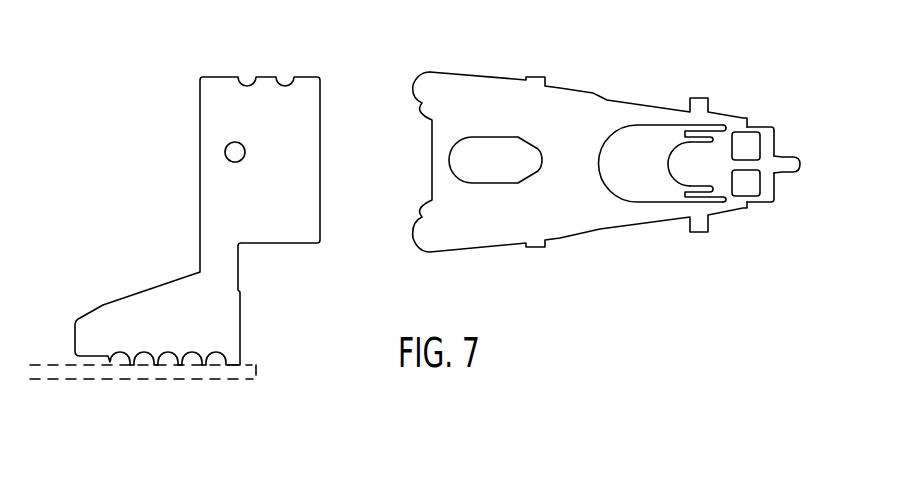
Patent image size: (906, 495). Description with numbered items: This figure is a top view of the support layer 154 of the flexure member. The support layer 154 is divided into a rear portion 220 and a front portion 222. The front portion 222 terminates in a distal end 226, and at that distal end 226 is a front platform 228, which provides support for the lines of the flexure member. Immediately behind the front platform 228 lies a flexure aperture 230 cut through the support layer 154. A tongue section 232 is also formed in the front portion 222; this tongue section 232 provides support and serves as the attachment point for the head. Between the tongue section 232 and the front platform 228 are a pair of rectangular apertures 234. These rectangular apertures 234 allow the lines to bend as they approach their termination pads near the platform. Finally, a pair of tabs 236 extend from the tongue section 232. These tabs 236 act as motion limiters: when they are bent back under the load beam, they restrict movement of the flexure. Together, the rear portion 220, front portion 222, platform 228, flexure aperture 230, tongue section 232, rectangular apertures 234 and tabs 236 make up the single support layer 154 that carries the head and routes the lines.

The support layer 154 is at (692, 302).
The rear portion 220 is at (218, 77).
The front portion 222 is at (573, 88).
The distal end 226 is at (800, 165).
The front platform 228 is at (775, 142).
The flexure aperture 230 is at (640, 152).
The tongue section 232 is at (700, 171).
The rectangular apertures 234 is at (748, 144).
The tabs 236 is at (682, 137).